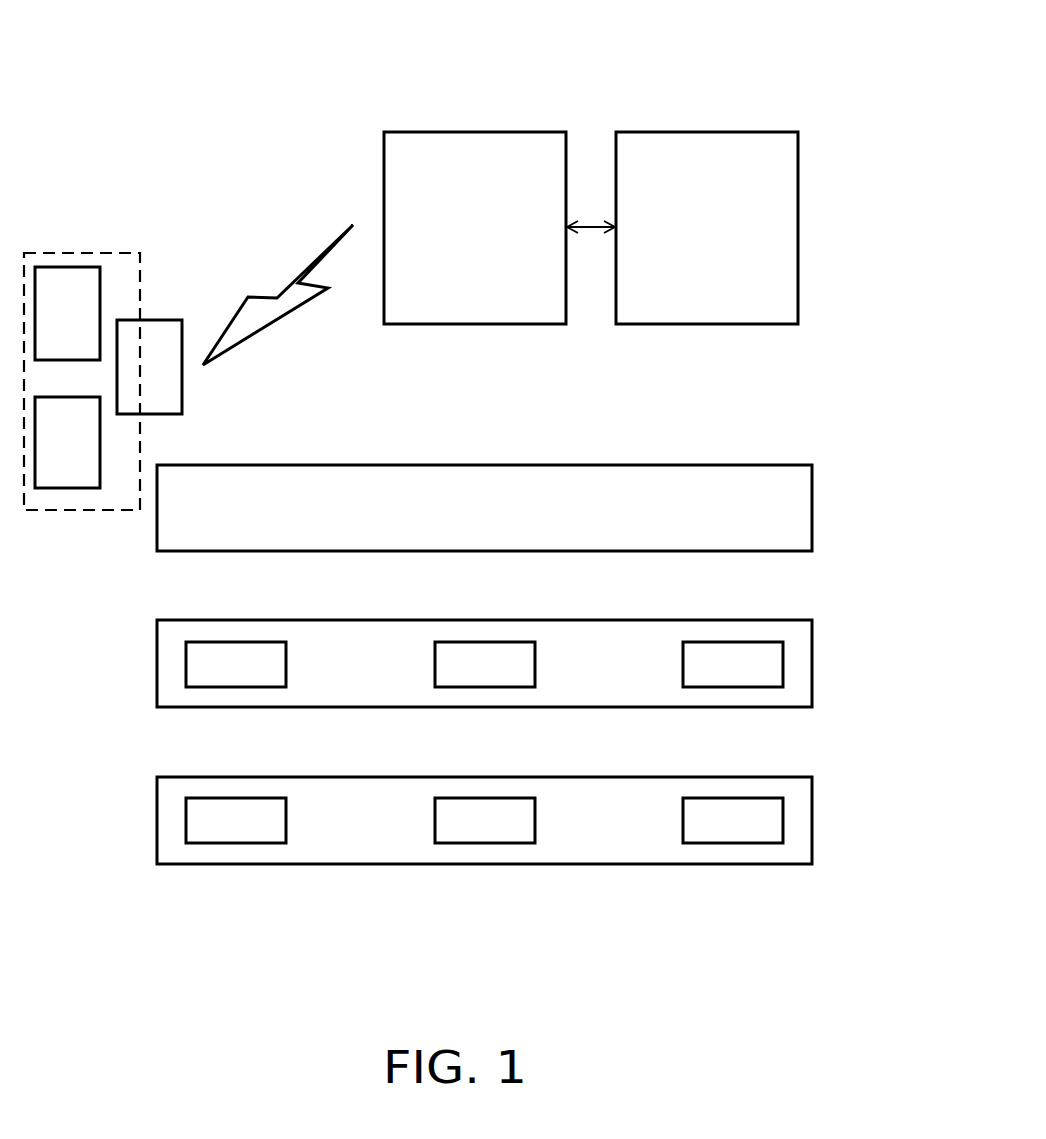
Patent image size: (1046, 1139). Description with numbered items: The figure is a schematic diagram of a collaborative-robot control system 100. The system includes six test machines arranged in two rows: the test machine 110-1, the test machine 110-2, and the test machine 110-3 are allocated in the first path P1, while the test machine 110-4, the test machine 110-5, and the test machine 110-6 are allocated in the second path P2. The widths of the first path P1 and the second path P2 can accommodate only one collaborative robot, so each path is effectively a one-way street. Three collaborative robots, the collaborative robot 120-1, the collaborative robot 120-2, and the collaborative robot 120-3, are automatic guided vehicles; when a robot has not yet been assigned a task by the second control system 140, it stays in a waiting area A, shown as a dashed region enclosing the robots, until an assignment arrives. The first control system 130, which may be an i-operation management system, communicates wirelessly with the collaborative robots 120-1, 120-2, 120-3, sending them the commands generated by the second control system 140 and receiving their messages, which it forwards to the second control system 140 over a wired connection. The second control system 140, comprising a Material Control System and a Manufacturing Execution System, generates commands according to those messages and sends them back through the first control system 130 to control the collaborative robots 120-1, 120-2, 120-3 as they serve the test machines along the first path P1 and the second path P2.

The collaborative-robot control system 100 is at (102, 34).
The test machine 110-1 is at (237, 687).
The test machine 110-2 is at (486, 687).
The test machine 110-3 is at (734, 687).
The test machine 110-4 is at (237, 843).
The test machine 110-5 is at (486, 843).
The test machine 110-6 is at (734, 843).
The collaborative robot 120-1 is at (67, 267).
The collaborative robot 120-2 is at (165, 320).
The collaborative robot 120-3 is at (66, 488).
The first control system 130 is at (386, 132).
The second control system 140 is at (618, 132).
The waiting area A is at (116, 253).
The first path P1 is at (796, 587).
The second path P2 is at (796, 745).